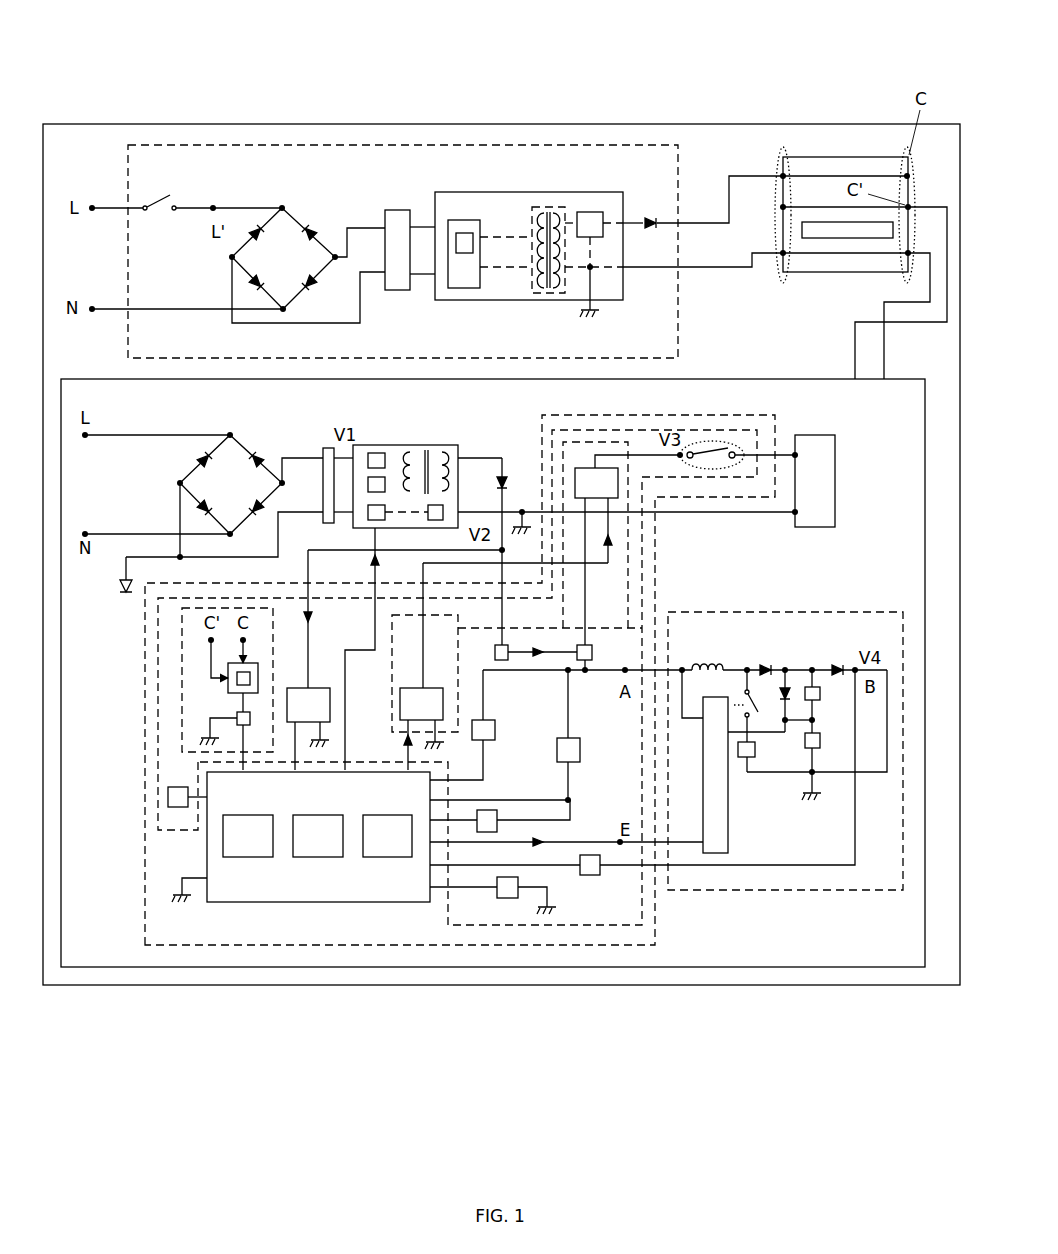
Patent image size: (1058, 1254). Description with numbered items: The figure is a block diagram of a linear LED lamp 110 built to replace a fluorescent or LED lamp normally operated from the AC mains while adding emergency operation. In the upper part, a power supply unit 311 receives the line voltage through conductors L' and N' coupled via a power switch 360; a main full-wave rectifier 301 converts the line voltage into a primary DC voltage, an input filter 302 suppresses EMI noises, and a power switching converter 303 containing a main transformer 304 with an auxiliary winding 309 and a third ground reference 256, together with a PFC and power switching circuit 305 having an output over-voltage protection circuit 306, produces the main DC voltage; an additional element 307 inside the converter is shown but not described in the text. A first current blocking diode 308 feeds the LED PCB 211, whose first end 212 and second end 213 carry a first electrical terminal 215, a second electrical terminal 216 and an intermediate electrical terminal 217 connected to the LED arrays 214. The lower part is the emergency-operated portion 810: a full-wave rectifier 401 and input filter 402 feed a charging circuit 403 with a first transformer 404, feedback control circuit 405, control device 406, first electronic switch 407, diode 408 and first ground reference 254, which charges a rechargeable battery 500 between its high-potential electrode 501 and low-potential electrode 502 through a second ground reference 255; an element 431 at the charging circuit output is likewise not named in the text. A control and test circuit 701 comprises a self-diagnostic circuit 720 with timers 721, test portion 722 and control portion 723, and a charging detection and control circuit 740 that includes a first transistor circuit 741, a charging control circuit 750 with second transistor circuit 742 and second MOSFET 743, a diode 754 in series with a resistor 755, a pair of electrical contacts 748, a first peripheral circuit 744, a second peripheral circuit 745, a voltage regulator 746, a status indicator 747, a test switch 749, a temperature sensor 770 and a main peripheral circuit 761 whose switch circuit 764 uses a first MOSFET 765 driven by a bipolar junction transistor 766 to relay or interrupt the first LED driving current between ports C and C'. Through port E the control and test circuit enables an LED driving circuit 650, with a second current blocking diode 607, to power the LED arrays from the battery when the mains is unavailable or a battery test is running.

The linear LED lamp 110 is at (398, 120).
The emergency-operated portion 810 is at (884, 970).
The power supply unit 311 is at (497, 142).
The power switch 360 is at (150, 200).
The main full-wave rectifier 301 is at (265, 198).
The input filter 302 is at (393, 210).
The power switching converter 303 is at (623, 190).
The main transformer 304 is at (548, 205).
The power factor correction and power switching circuit 305 is at (450, 286).
The output over-voltage protection circuit 306 is at (470, 252).
The output rectifier 307 is at (598, 210).
The first current blocking diode 308 is at (657, 224).
The auxiliary winding 309 is at (545, 292).
The third ground reference 256 is at (597, 314).
The LED printed circuit board 211 is at (828, 157).
The first end 212 is at (786, 278).
The second end 213 is at (906, 157).
The LED arrays 214 is at (850, 240).
The first electrical terminal 215 is at (905, 176).
The second electrical terminal 216 is at (780, 256).
The intermediate electrical terminal 217 is at (781, 174).
The full-wave rectifier 401 is at (222, 432).
The input filter 402 is at (325, 450).
The charging circuit 403 is at (425, 445).
The first transformer 404 is at (445, 480).
The feedback control circuit 405 is at (435, 522).
The control device 406 is at (372, 548).
The first electronic switch 407 is at (368, 516).
The diode 408 is at (378, 452).
The diode 431 is at (506, 480).
The first ground reference 254 is at (122, 593).
The rechargeable battery 500 is at (815, 528).
The high-potential electrode 501 is at (798, 452).
The low-potential electrode 502 is at (797, 516).
The pair of electrical contacts 748 is at (730, 443).
The second MOSFET 743 is at (620, 490).
The charging control circuit 750 is at (640, 565).
The charging detection and control circuit 740 is at (562, 930).
The second peripheral circuit 745 is at (594, 877).
The control and test circuit 701 is at (650, 950).
The main peripheral circuit 761 is at (180, 726).
The switch circuit 764 is at (226, 682).
The first MOSFET 765 is at (225, 676).
The bipolar junction transistor 766 is at (237, 716).
The first transistor circuit 741 is at (312, 688).
The second transistor circuit 742 is at (402, 700).
The self-diagnostic circuit 720 is at (362, 906).
The timers 721 is at (248, 858).
The test portion 722 is at (318, 858).
The control portion 723 is at (388, 858).
The temperature sensor 770 is at (168, 797).
The second ground reference 255 is at (180, 902).
The diode 754 is at (504, 661).
The resistor 755 is at (588, 661).
The first peripheral circuit 744 is at (496, 732).
The voltage regulator 746 is at (581, 762).
The status indicator 747 is at (487, 833).
The test switch 749 is at (510, 899).
The second current blocking diode 607 is at (834, 665).
The LED driving circuit 650 is at (737, 893).